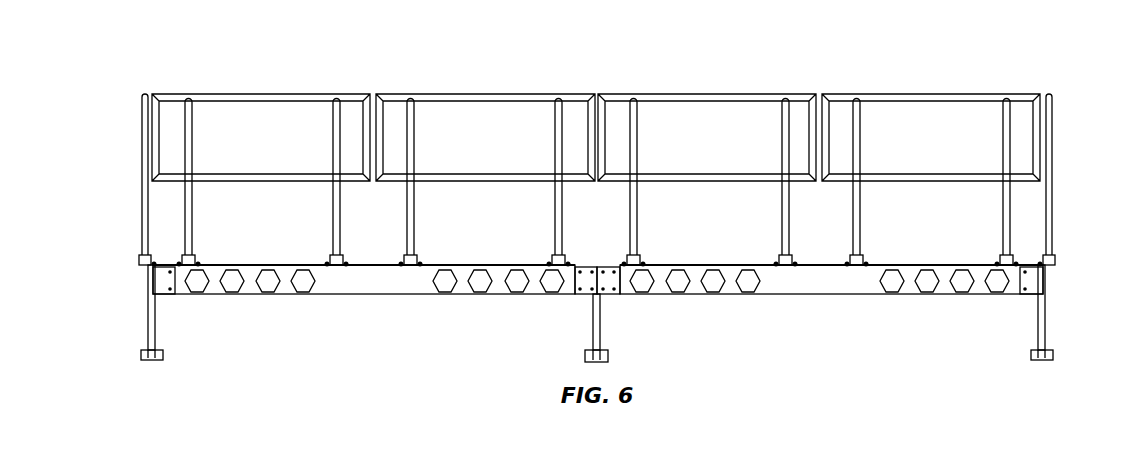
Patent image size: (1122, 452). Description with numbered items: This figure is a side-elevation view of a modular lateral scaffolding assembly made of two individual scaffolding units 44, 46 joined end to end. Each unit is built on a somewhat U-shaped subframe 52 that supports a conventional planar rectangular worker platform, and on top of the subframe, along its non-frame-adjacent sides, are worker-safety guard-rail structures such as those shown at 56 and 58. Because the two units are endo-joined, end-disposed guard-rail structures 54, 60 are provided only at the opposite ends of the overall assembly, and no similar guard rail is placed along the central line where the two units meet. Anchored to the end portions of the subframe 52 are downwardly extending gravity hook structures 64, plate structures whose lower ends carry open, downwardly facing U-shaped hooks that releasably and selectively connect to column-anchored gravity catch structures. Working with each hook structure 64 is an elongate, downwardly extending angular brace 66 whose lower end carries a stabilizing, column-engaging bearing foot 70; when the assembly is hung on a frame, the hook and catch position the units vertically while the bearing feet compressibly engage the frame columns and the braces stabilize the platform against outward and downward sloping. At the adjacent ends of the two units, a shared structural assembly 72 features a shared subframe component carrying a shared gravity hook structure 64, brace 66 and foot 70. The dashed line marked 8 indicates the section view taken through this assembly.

The section line 8- 8 is at (660, 317).
The scaffolding unit 44 is at (397, 83).
The scaffolding unit 46 is at (800, 83).
The subframe 52 is at (250, 263).
The guard-rail structure 54 is at (141, 137).
The guard-rail structure 56 is at (260, 97).
The guard-rail structure 58 is at (487, 97).
The guard-rail structure 60 is at (1053, 137).
The gravity hook structure 64 is at (146, 291).
The angular brace 66 is at (150, 322).
The bearing foot 70 is at (162, 350).
The shared structural assembly 72 is at (584, 332).